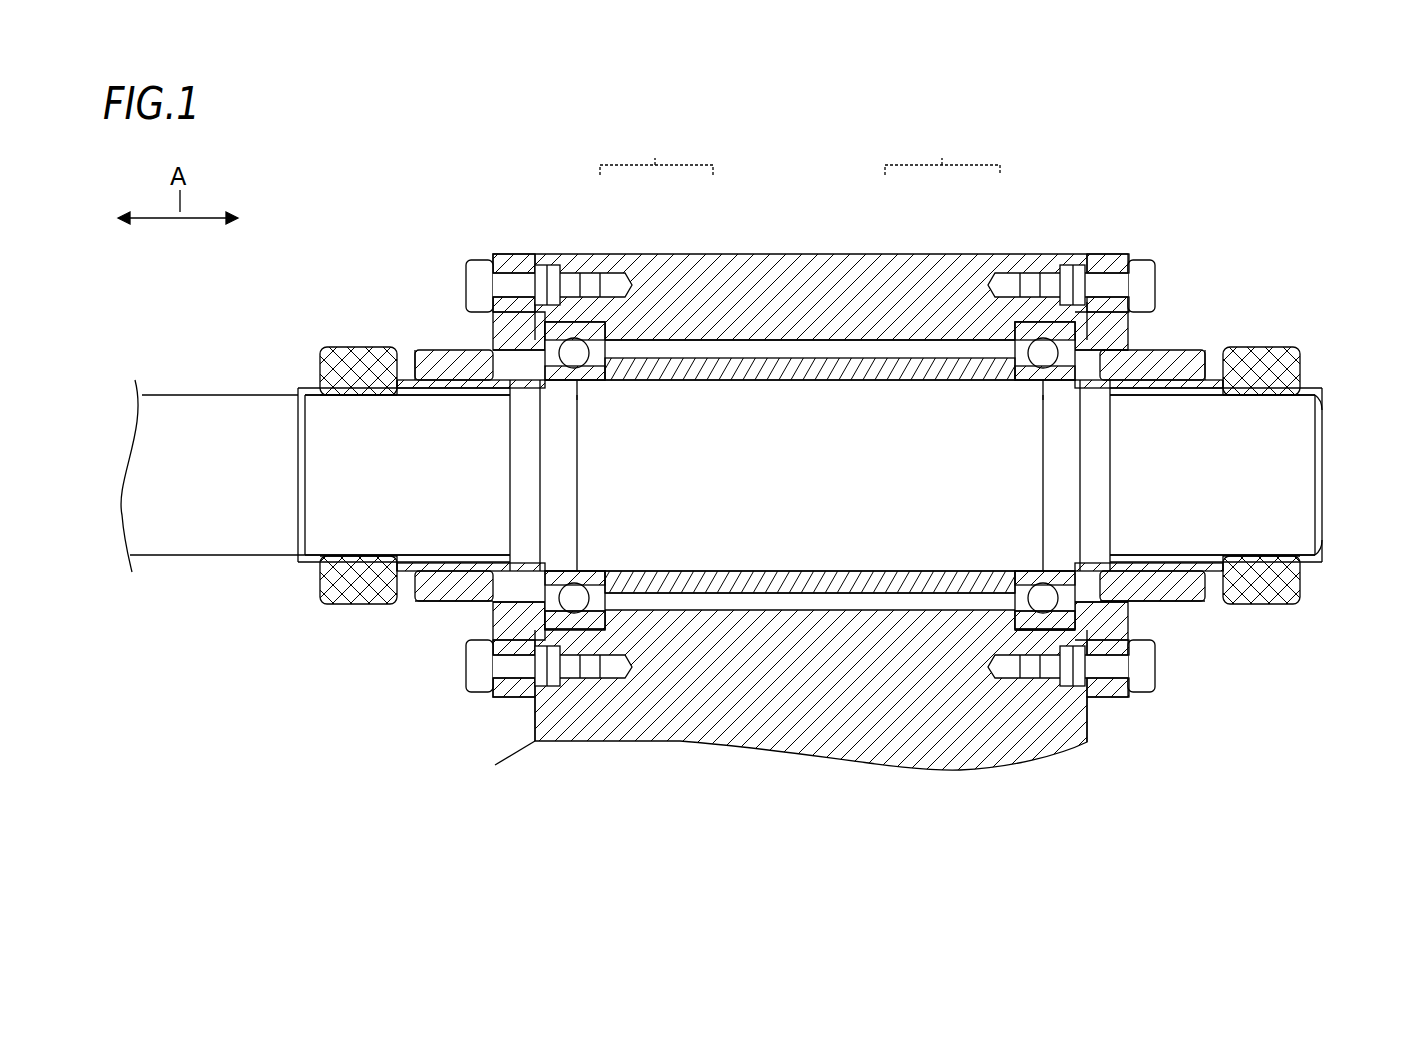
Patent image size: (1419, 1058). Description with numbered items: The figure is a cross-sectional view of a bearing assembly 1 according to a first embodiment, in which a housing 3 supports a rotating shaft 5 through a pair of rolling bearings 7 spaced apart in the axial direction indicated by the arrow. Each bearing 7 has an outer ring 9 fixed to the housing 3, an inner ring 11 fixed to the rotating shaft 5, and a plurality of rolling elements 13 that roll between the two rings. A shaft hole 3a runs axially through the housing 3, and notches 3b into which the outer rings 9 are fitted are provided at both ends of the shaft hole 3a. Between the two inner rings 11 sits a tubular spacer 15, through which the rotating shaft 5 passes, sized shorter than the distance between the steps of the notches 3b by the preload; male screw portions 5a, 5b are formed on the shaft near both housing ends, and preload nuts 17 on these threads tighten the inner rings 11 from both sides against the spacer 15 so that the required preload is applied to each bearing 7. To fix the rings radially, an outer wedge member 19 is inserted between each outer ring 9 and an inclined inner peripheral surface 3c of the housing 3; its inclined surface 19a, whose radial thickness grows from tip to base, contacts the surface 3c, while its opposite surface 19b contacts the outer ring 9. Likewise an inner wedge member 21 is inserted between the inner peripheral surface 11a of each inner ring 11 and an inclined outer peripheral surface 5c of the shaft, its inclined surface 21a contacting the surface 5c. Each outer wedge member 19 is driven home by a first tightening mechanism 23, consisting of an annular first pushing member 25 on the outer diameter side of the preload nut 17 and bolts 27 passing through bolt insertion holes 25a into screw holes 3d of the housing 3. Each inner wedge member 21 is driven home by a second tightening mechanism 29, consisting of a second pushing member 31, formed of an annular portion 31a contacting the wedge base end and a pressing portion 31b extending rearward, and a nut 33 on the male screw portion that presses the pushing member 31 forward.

The bearing assembly 1 is at (342, 187).
The housing 3 is at (828, 254).
The shaft hole 3a is at (765, 345).
The notch 3b is at (495, 330).
The inclined inner peripheral surface 3c is at (507, 703).
The screw hole 3d is at (570, 254).
The rotating shaft 5 is at (175, 408).
The male screw portion 5a is at (370, 390).
The male screw portion 5b is at (1295, 350).
The inclined outer peripheral surface 5c is at (1000, 640).
The rolling bearing 7 is at (800, 154).
The outer ring 9 is at (620, 254).
The inner ring 11 is at (700, 254).
The inner peripheral surface 11a is at (470, 432).
The rolling element 13 is at (655, 254).
The spacer 15 is at (800, 600).
The preload nut 17 is at (440, 605).
The outer wedge member 19 is at (555, 268).
The inclined surface 19a is at (545, 670).
The surface opposite from the inclined surface 19b is at (552, 638).
The inner wedge member 21 is at (527, 400).
The inclined surface 21a is at (1115, 540).
The first tightening mechanism 23 is at (465, 262).
The first pushing member 25 is at (500, 254).
The bolt insertion hole 25a is at (495, 255).
The bolt 27 is at (468, 275).
The second tightening mechanism 29 is at (326, 355).
The second pushing member 31 is at (408, 372).
The annular portion 31a is at (430, 605).
The pressing portion 31b is at (428, 348).
The nut 33 is at (340, 600).